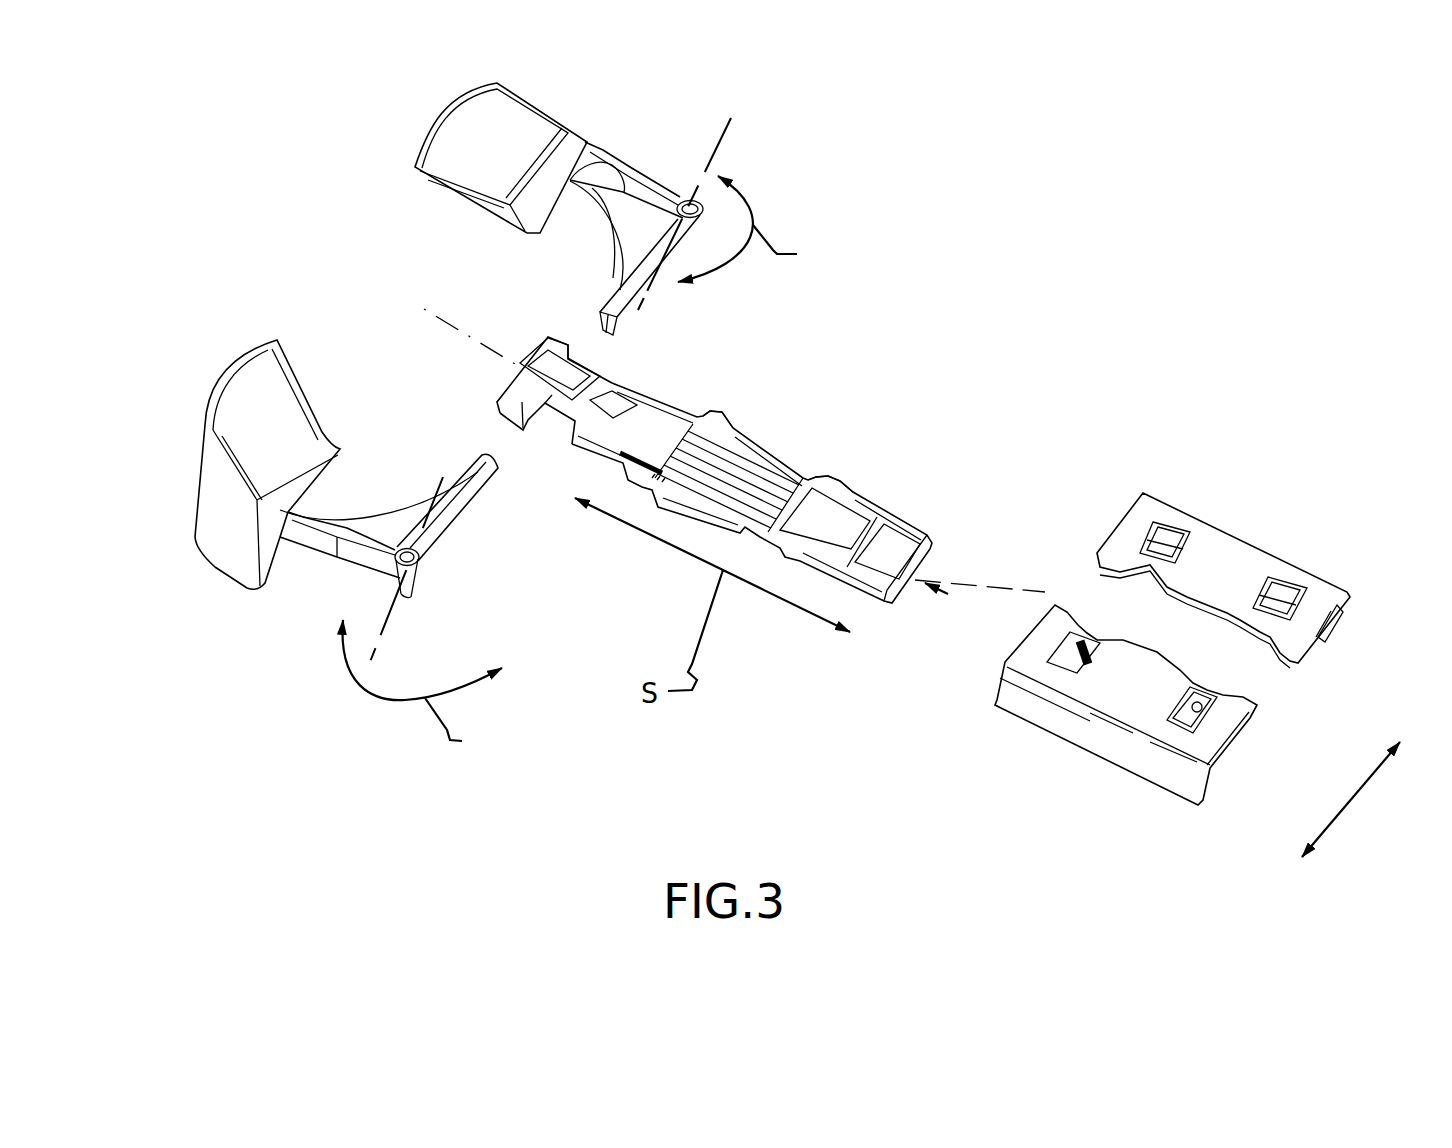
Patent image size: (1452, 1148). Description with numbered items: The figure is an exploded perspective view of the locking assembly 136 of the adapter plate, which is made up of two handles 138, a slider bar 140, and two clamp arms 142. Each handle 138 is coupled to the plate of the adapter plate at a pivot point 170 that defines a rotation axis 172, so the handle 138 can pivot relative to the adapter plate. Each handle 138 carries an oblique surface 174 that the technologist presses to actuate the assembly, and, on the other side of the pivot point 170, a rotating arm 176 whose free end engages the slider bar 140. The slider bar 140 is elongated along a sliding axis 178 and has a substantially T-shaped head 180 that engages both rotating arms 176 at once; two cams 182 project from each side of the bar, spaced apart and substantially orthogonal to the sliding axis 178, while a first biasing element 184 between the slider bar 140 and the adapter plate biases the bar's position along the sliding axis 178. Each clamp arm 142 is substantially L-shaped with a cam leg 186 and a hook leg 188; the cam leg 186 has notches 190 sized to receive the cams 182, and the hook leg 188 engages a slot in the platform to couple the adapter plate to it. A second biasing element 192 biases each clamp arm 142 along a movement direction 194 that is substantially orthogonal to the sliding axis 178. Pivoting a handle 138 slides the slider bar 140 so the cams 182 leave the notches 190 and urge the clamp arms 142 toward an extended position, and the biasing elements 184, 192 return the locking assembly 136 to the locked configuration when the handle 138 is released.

The locking assembly 136 is at (1102, 195).
The handle 138 is at (483, 422).
The slider bar 140 is at (748, 470).
The clamp arm 142 is at (1188, 650).
The pivot point 170 is at (700, 227).
The rotation axis 172 is at (732, 133).
The oblique surface 174 is at (466, 201).
The rotating arm 176 is at (490, 371).
The sliding axis 178 is at (943, 591).
The head 180 is at (621, 342).
The cam 182 is at (828, 474).
The first biasing element 184 is at (698, 418).
The cam leg 186 is at (1319, 638).
The hook leg 188 is at (1345, 621).
The notch 190 is at (1094, 636).
The second biasing element 192 is at (1066, 668).
The movement direction 194 is at (1350, 800).